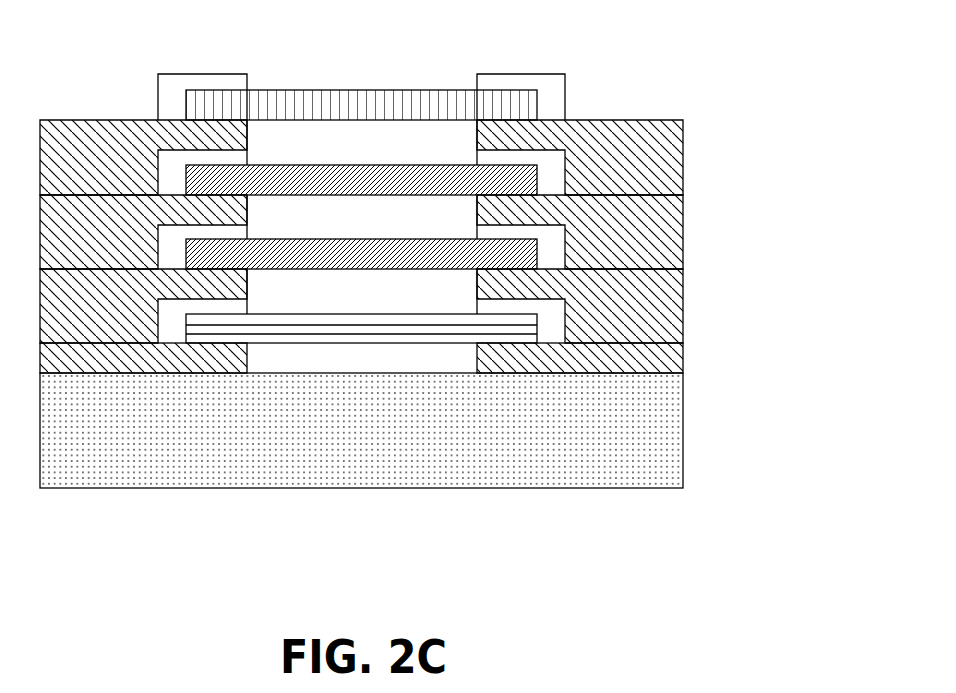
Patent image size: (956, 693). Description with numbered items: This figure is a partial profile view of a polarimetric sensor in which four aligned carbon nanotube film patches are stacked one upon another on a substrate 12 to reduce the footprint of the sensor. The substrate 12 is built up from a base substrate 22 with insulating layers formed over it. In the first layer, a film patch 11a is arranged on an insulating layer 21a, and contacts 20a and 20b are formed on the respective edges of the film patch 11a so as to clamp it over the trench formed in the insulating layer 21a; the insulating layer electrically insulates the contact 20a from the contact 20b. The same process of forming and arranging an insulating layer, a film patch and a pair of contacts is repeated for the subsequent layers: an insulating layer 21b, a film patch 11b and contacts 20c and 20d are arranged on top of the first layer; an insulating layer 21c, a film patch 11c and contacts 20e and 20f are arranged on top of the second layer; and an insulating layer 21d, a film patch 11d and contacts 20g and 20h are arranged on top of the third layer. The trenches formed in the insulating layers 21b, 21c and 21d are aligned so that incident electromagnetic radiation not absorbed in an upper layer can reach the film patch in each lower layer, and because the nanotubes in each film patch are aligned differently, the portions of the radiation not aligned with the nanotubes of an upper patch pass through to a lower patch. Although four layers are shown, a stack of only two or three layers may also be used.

The substrate 12 is at (443, 284).
The base substrate 22 is at (162, 489).
The insulating layer 21a is at (683, 357).
The insulating layer 21b is at (683, 302).
The insulating layer 21c is at (683, 230).
The insulating layer 21d is at (683, 157).
The film patch 11a is at (307, 313).
The film patch 11b is at (307, 238).
The film patch 11c is at (307, 163).
The film patch 11d is at (308, 90).
The contact 20a is at (222, 304).
The contact 20b is at (497, 303).
The contact 20c is at (217, 229).
The contact 20d is at (497, 229).
The contact 20e is at (216, 157).
The contact 20f is at (498, 158).
The contact 20g is at (211, 74).
The contact 20h is at (513, 72).